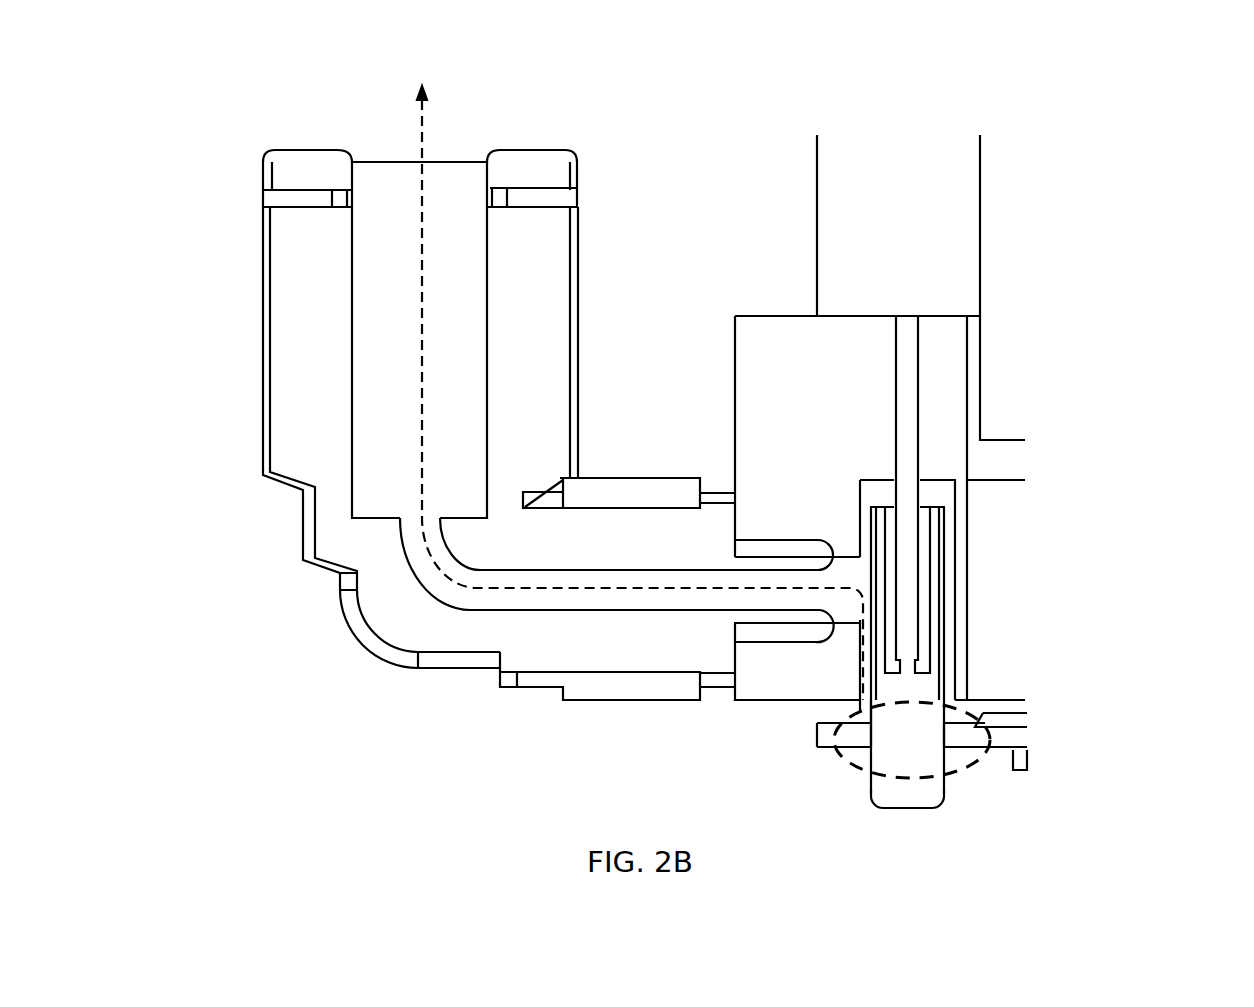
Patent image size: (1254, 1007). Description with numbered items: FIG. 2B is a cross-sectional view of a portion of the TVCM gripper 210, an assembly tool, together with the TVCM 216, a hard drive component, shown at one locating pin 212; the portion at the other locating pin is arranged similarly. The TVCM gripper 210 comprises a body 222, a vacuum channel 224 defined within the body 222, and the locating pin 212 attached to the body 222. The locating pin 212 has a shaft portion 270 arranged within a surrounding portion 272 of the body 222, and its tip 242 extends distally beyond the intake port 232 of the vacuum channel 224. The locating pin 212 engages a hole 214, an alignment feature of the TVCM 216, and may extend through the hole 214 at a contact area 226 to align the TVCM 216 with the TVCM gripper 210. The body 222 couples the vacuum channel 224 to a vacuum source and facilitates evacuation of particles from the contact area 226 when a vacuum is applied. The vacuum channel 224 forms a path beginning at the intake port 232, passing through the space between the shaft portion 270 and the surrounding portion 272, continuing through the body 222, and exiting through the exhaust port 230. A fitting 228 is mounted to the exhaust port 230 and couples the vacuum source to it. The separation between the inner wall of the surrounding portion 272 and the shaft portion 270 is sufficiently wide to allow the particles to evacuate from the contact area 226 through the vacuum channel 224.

The TVCM gripper 210 is at (1037, 43).
The locating pin 212 is at (942, 510).
The hole 214 is at (872, 748).
The TVCM 216 is at (1003, 731).
The body 222 is at (950, 358).
The vacuum channel 224 is at (848, 568).
The contact area 226 is at (837, 750).
The fitting 228 is at (297, 355).
The exhaust port 230 is at (740, 553).
The intake port 232 is at (863, 700).
The tip 242 is at (925, 795).
The shaft portion 270 is at (935, 623).
The surrounding portion 272 is at (957, 673).